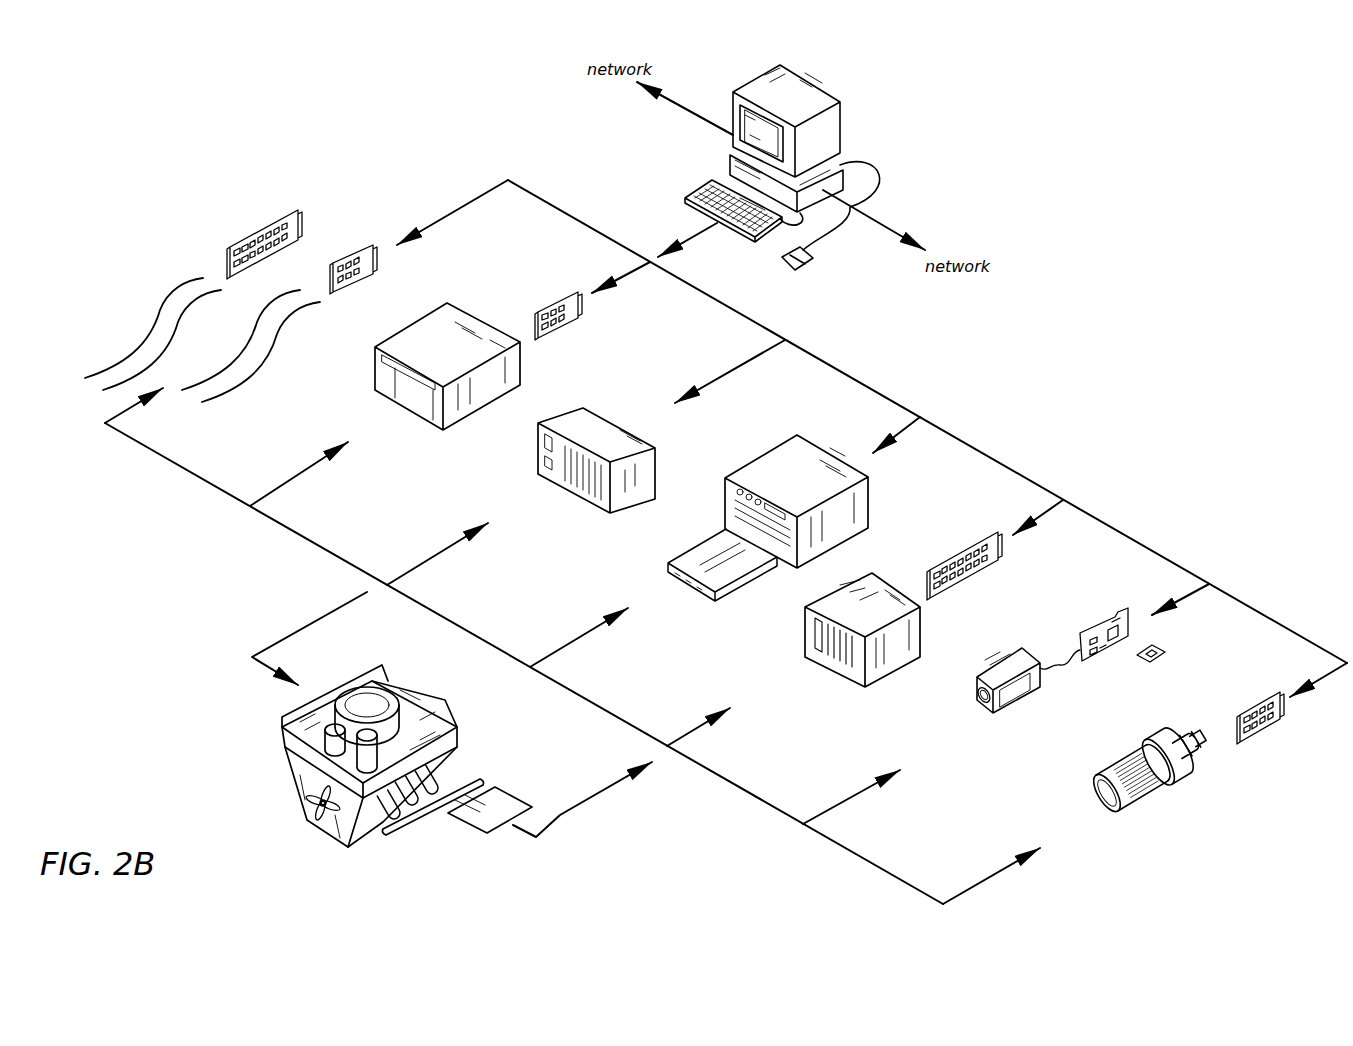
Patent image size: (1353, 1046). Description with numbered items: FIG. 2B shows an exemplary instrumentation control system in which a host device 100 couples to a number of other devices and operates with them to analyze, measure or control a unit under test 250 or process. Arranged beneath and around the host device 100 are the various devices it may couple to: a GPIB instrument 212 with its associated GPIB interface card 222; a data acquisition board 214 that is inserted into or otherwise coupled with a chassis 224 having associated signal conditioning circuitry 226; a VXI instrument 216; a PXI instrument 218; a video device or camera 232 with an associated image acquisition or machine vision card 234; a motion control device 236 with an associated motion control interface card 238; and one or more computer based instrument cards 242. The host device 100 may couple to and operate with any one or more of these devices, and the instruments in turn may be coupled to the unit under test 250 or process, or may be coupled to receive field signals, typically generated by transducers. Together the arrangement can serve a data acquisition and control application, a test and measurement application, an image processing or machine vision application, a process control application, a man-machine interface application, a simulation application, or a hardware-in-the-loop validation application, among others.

The host device 100 is at (807, 88).
The computer based instrument cards 242 is at (247, 237).
The GPIB instrument 212 is at (405, 337).
The GPIB interface card 222 is at (552, 303).
The PXI instrument 218 is at (573, 495).
The VXI instrument 216 is at (767, 463).
The chassis 224 is at (815, 640).
The signal conditioning circuitry 226 is at (835, 667).
The data acquisition board 214 is at (970, 607).
The image acquisition card 234 is at (1092, 623).
The video device or camera 232 is at (1017, 700).
The motion control device 236 is at (1140, 787).
The motion control interface card 238 is at (1263, 732).
The unit under test 250 is at (295, 780).